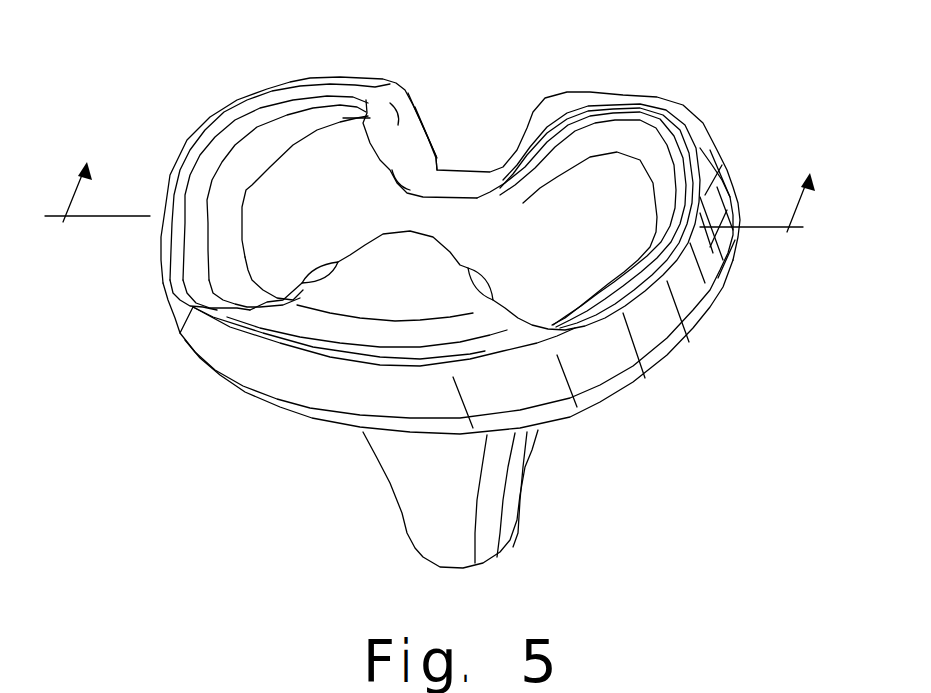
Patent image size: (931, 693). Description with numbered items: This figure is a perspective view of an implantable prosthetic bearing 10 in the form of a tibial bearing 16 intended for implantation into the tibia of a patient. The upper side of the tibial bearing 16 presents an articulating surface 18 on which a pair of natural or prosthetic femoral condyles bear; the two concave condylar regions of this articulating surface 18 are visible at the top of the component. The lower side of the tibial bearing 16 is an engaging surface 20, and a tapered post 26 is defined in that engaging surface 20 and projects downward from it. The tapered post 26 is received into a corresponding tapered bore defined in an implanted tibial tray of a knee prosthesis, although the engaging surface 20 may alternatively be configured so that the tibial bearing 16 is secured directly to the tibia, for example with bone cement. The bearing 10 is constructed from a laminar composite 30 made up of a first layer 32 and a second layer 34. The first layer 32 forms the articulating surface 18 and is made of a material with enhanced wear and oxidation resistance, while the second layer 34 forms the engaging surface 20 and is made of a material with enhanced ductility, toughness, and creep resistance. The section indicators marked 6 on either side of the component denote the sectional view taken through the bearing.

The implantable prosthetic bearing 10 is at (420, 299).
The tibial bearing 16 is at (475, 197).
The articulating surface 18 is at (410, 118).
The engaging surface 20 is at (459, 408).
The tapered post 26 is at (444, 499).
The laminar composite 30 is at (750, 266).
The first layer 32 is at (354, 324).
The second layer 34 is at (456, 288).
The section line 6- 6 is at (430, 197).